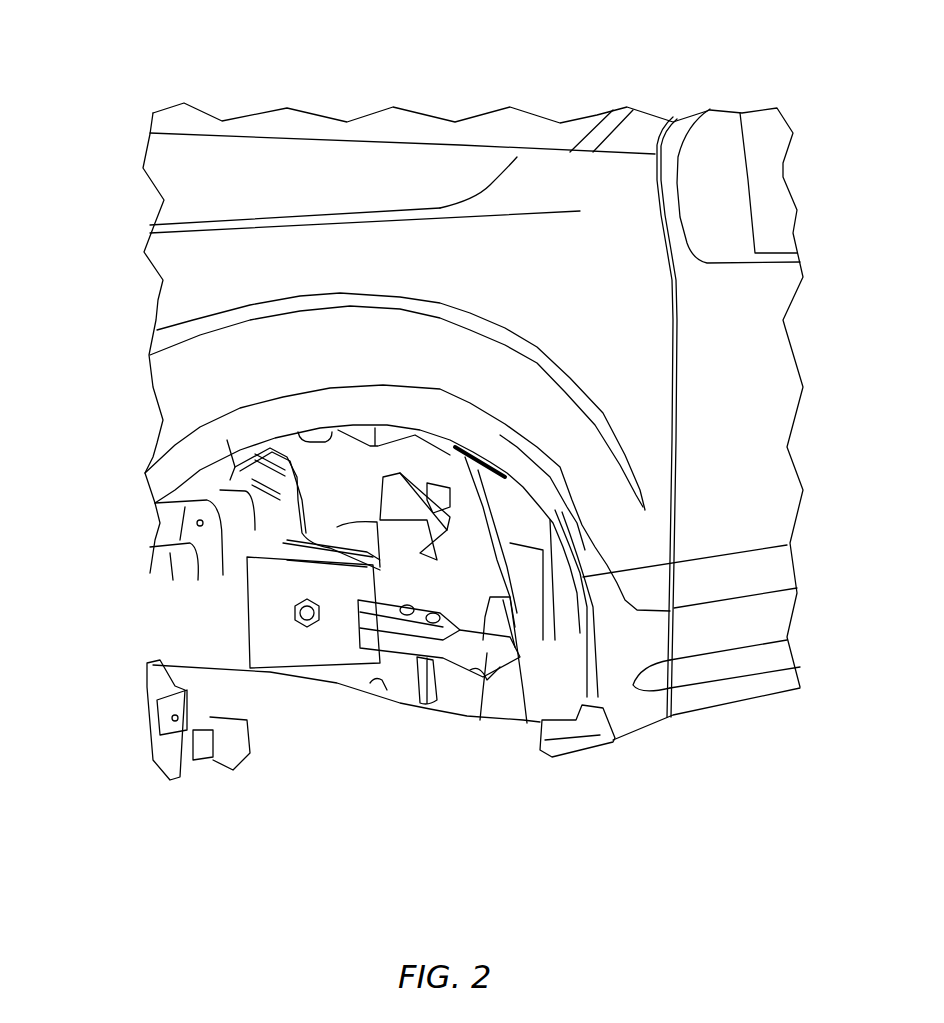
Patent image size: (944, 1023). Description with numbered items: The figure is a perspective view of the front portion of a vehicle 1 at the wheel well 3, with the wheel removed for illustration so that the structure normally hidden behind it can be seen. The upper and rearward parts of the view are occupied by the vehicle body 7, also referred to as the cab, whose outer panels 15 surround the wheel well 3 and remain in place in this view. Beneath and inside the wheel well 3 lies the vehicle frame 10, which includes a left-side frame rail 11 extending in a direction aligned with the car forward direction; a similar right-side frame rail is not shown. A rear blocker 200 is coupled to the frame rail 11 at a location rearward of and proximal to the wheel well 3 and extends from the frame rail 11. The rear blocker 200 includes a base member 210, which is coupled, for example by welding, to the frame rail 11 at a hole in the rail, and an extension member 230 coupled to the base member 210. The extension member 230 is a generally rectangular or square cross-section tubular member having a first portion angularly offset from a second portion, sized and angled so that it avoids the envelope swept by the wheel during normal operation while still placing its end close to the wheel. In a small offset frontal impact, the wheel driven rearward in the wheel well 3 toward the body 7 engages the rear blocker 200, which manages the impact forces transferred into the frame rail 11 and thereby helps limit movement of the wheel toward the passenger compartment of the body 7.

The vehicle 1 is at (655, 95).
The wheel well 3 is at (357, 808).
The vehicle body 7 is at (124, 308).
The vehicle frame 10 is at (86, 651).
The frame rail 11 is at (167, 650).
The outer panels 15 is at (527, 392).
The rear blocker 200 is at (507, 669).
The base member 210 is at (367, 650).
The extension member 230 is at (520, 677).